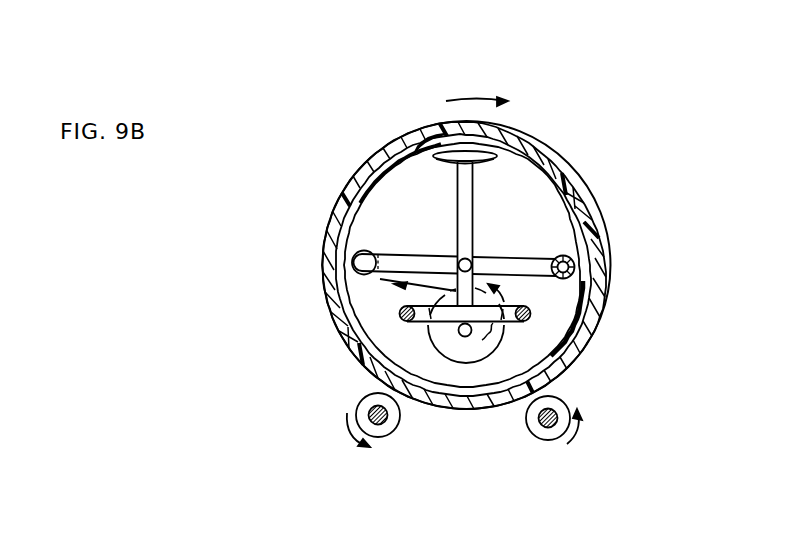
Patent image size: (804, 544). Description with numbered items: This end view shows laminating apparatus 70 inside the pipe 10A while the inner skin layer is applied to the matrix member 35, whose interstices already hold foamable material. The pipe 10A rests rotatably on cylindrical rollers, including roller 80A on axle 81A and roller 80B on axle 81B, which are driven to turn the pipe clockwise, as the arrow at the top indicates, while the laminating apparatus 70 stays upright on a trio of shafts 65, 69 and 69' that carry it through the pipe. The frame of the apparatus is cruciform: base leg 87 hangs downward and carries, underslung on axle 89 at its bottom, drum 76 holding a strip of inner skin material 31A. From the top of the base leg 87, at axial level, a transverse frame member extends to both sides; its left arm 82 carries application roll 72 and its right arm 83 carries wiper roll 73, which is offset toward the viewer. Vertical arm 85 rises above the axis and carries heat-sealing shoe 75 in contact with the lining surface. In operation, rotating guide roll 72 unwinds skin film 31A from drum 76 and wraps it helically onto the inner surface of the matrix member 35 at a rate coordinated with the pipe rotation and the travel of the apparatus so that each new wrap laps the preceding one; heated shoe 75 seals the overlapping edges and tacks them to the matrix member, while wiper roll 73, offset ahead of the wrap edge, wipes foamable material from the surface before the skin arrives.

The housing 10A is at (545, 143).
The inner skin strip material 31A is at (572, 172).
The wall portion 35 is at (558, 178).
The heat-sealing shoe 75 is at (455, 165).
The vertical arm 85 is at (463, 204).
The laminating apparatus 70 is at (458, 230).
The right arm 83 is at (511, 258).
The left arm 82 is at (413, 255).
The application roll 72 is at (363, 254).
The shaft 65 is at (469, 258).
The wiper roll 73 is at (561, 258).
The base leg 87 is at (491, 281).
The shaft 69 is at (460, 330).
The shaft 69' is at (506, 330).
The drum 76 is at (462, 365).
The axle 89 is at (459, 331).
The roller 80A is at (360, 404).
The roller 80B is at (567, 404).
The axle 81A is at (389, 415).
The axle 81B is at (546, 419).